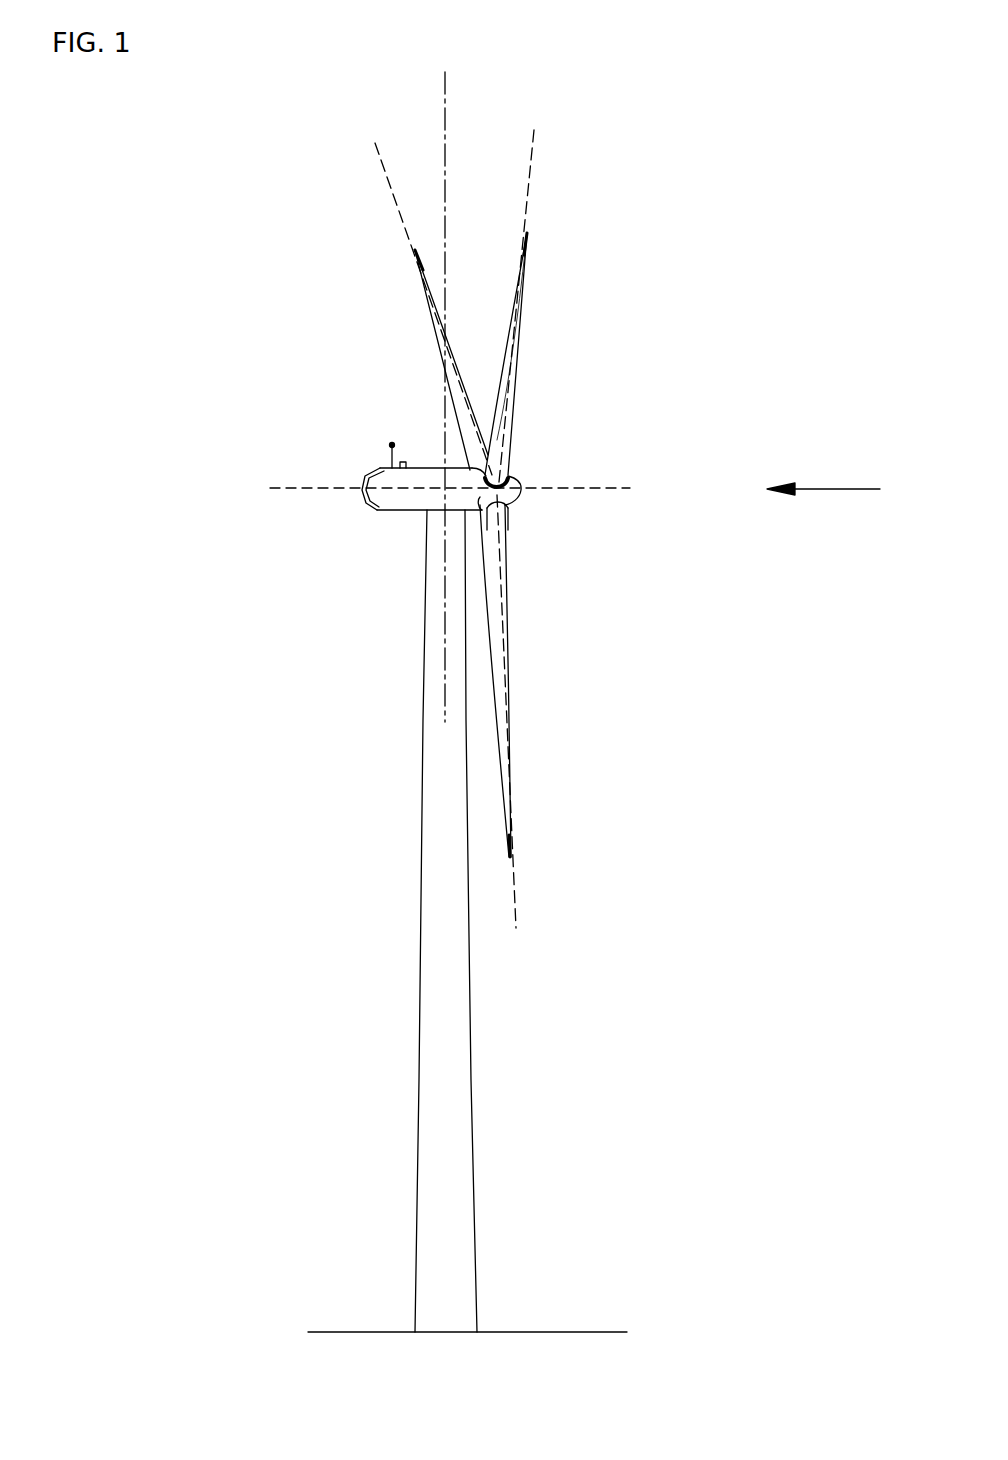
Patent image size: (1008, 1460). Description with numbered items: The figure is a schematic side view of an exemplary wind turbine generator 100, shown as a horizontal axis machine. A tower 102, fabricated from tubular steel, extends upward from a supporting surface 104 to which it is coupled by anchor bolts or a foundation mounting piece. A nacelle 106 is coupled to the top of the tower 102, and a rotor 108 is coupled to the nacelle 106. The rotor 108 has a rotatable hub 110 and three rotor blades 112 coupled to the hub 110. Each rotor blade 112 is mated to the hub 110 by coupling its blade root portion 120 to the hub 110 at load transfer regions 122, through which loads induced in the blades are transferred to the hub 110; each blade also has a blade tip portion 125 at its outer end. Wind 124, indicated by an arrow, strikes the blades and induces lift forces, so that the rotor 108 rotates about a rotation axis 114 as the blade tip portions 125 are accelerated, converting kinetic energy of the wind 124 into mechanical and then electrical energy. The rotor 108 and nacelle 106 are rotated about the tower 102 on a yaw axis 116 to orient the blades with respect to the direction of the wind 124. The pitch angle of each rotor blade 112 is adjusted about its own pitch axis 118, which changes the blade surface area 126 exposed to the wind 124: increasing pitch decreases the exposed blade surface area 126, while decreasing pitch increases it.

The wind turbine generator 100 is at (190, 265).
The tower 102 is at (418, 1090).
The supporting surface 104 is at (372, 1330).
The nacelle 106 is at (397, 514).
The rotor 108 is at (527, 387).
The rotatable hub 110 is at (517, 481).
The rotor blades 112 is at (442, 330).
The rotation axis 114 is at (595, 490).
The yaw axis 116 is at (445, 96).
The pitch axis 118 is at (384, 172).
The blade root portion 120 is at (505, 572).
The load transfer regions 122 is at (503, 508).
The wind 124 is at (845, 489).
The blade tip portion 125 is at (420, 258).
The blade surface area 126 is at (510, 438).